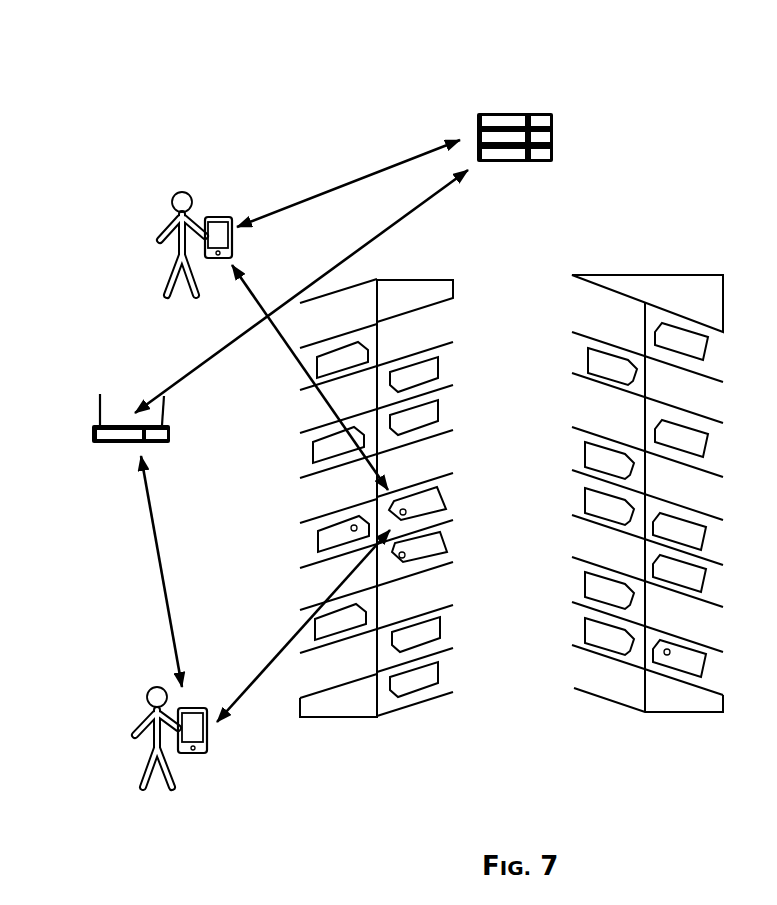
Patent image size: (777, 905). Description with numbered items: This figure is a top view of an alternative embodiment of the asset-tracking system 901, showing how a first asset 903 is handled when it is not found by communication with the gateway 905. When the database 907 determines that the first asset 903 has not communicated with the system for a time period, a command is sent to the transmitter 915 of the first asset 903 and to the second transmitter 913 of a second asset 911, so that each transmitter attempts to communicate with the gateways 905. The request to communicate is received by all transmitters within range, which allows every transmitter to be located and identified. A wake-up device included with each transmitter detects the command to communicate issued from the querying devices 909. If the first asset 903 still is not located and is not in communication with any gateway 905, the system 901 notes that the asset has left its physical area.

The system 901 is at (186, 74).
The first asset 903 is at (446, 512).
The gateway 905 is at (99, 408).
The database 907 is at (555, 120).
The querying device 909 is at (220, 215).
The second asset 911 is at (447, 551).
The second transmitter 913 is at (408, 557).
The transmitter 915 is at (448, 493).